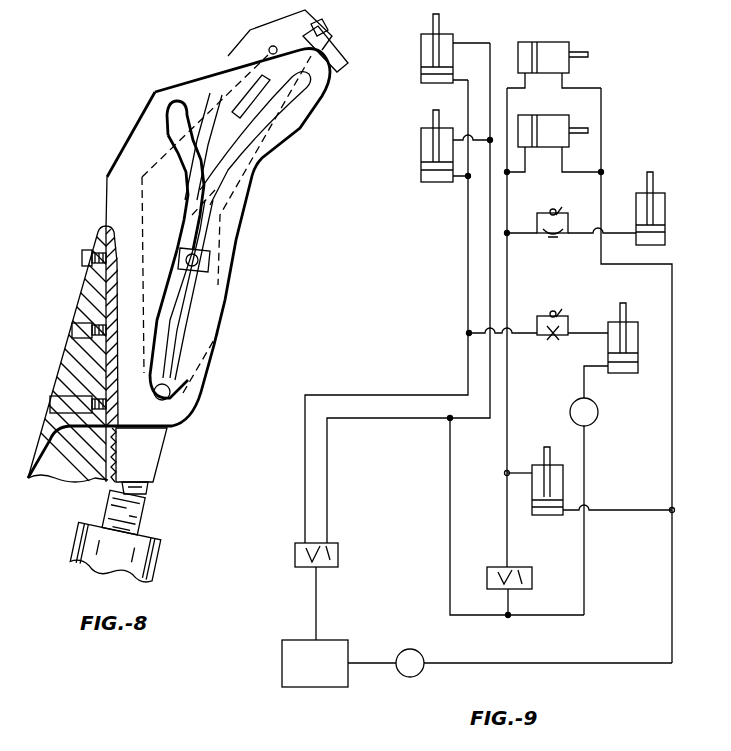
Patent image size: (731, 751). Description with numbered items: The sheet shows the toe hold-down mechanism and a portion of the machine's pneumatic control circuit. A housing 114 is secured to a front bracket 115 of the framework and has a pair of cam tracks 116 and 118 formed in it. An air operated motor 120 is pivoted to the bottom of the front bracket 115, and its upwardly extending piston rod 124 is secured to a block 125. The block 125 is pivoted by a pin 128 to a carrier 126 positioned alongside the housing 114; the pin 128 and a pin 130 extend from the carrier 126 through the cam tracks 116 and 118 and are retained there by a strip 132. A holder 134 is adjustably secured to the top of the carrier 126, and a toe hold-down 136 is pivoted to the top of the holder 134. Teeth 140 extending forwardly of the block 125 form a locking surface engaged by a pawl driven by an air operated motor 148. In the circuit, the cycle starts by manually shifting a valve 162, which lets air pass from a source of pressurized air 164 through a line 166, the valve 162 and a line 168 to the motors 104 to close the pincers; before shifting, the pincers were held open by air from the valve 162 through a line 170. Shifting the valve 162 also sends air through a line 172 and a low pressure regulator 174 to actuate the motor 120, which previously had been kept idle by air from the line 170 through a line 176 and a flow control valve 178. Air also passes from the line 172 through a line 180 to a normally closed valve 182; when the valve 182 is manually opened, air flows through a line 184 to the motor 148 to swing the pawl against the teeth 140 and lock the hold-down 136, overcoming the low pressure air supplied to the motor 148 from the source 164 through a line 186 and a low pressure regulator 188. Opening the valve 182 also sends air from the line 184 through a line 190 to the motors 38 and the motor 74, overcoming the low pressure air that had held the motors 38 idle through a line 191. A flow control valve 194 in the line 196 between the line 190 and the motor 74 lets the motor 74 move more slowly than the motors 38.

In FIG. 9, the motors 38 is at (553, 118).
In FIG. 9, the motor 74 is at (660, 205).
In FIG. 9, the motors 104 is at (425, 145).
In FIG. 8, the housing 114 is at (128, 157).
In FIG. 8, the front bracket 115 is at (88, 310).
In FIG. 8, the cam track 116 is at (167, 110).
In FIG. 8, the cam track 118 is at (202, 226).
In FIG. 8, the air operated motor 120 is at (142, 556).
In FIG. 9, the air operated motor 120 is at (630, 318).
In FIG. 8, the piston rod 124 is at (147, 491).
In FIG. 8, the block 125 is at (153, 455).
In FIG. 8, the carrier 126 is at (215, 288).
In FIG. 8, the pin 128 is at (170, 390).
In FIG. 8, the pin 130 is at (198, 260).
In FIG. 8, the strip 132 is at (183, 313).
In FIG. 8, the holder 134 is at (240, 52).
In FIG. 8, the toe hold-down 136 is at (325, 55).
In FIG. 8, the teeth 140 is at (108, 462).
In FIG. 9, the air operated motor 148 is at (540, 512).
In FIG. 9, the valve 162 is at (300, 545).
In FIG. 9, the source of pressurized air 164 is at (300, 645).
In FIG. 9, the line 166 is at (316, 585).
In FIG. 9, the line 168 is at (327, 478).
In FIG. 9, the line 170 is at (442, 393).
In FIG. 9, the line 172 is at (449, 555).
In FIG. 9, the low pressure regulator 174 is at (598, 412).
In FIG. 9, the line 176 is at (523, 335).
In FIG. 9, the flow control valve 178 is at (548, 312).
In FIG. 9, the line 180 is at (508, 598).
In FIG. 9, the normally closed valve 182 is at (522, 567).
In FIG. 9, the line 184 is at (520, 471).
In FIG. 9, the line 186 is at (645, 510).
In FIG. 9, the low pressure regulator 188 is at (424, 658).
In FIG. 9, the line 190 is at (507, 258).
In FIG. 9, the line 191 is at (672, 460).
In FIG. 9, the flow control valve 194 is at (558, 211).
In FIG. 9, the line 196 is at (528, 230).